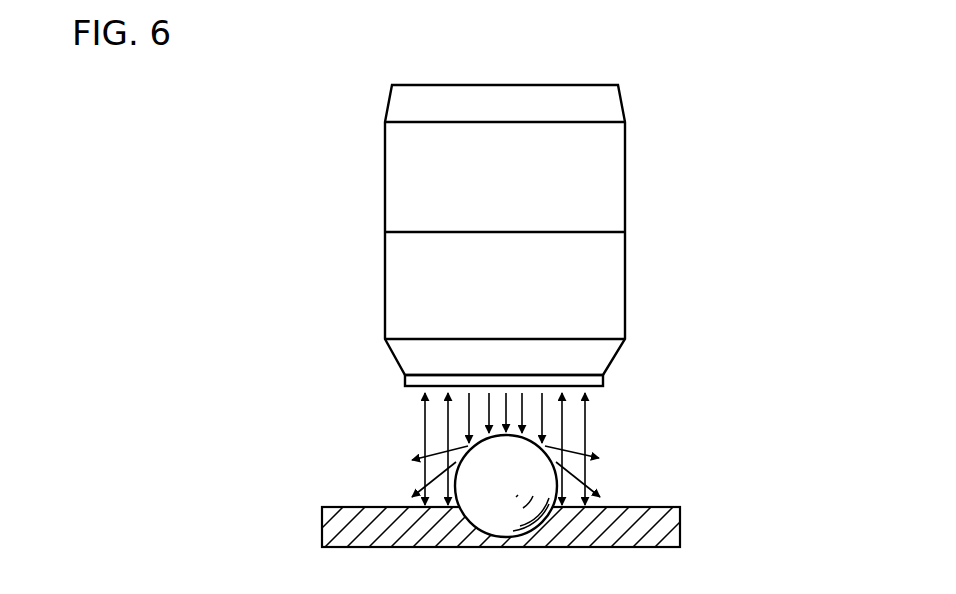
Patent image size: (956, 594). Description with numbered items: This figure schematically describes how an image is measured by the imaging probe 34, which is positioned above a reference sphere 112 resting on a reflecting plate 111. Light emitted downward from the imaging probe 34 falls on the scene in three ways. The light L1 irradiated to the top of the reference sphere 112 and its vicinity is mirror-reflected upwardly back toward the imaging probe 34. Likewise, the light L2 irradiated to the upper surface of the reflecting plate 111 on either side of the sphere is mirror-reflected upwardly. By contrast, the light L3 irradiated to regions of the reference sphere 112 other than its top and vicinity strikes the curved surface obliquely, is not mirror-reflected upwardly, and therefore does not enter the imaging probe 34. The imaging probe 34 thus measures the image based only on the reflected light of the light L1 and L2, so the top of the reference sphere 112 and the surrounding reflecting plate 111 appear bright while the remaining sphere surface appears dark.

The imaging probe 34 is at (381, 183).
The reflecting plate 111 is at (681, 528).
The reference sphere 112 is at (557, 468).
The light irradiated to top of reference sphere L1 is at (508, 409).
The light irradiated to reflecting plate L2 is at (425, 418).
The light irradiated to other regions of reference sphere L3 is at (566, 448).